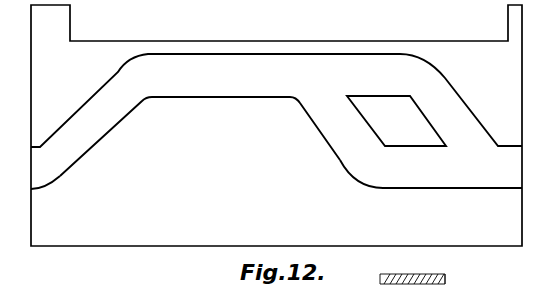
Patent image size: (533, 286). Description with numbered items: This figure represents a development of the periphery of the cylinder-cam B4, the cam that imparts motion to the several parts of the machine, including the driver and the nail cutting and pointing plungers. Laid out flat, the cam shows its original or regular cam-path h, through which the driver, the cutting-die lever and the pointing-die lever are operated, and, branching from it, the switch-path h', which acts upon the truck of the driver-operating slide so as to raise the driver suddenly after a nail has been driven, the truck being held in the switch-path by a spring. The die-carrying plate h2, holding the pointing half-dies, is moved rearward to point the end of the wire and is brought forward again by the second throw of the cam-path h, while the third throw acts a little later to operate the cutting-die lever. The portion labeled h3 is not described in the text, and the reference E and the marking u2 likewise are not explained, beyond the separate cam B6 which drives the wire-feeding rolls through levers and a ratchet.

The cam B6 is at (511, 25).
The regular cam-path h is at (276, 100).
The die-carrying plate h2 is at (106, 136).
The right inclined portion h3 is at (317, 128).
The cylinder-cam B4 is at (276, 143).
The switch-path h' is at (400, 121).
The section indicator u2 is at (401, 279).
The section line marker E is at (452, 279).